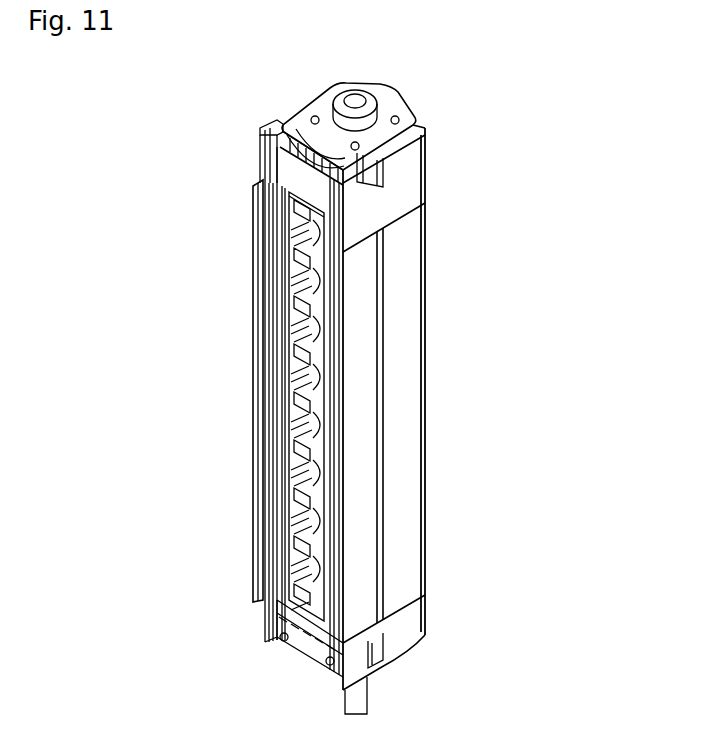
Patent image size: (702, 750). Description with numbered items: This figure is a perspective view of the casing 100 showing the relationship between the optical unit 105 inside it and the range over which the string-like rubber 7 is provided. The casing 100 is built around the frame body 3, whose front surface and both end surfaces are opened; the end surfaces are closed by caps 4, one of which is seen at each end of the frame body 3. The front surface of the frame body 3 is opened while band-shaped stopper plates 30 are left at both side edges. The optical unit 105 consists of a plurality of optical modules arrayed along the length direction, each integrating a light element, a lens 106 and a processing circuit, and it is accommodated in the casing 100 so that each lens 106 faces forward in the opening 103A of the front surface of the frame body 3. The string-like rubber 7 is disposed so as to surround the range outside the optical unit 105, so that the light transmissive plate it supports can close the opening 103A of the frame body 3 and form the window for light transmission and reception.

The casing 100 is at (487, 191).
The string-like rubber 7 is at (259, 131).
The cap 4 is at (417, 125).
The band-shaped stopper plate 30 is at (260, 230).
The frame body 3 is at (408, 345).
The opening 103A is at (322, 432).
The lens 106 is at (297, 328).
The optical unit 105 is at (287, 447).